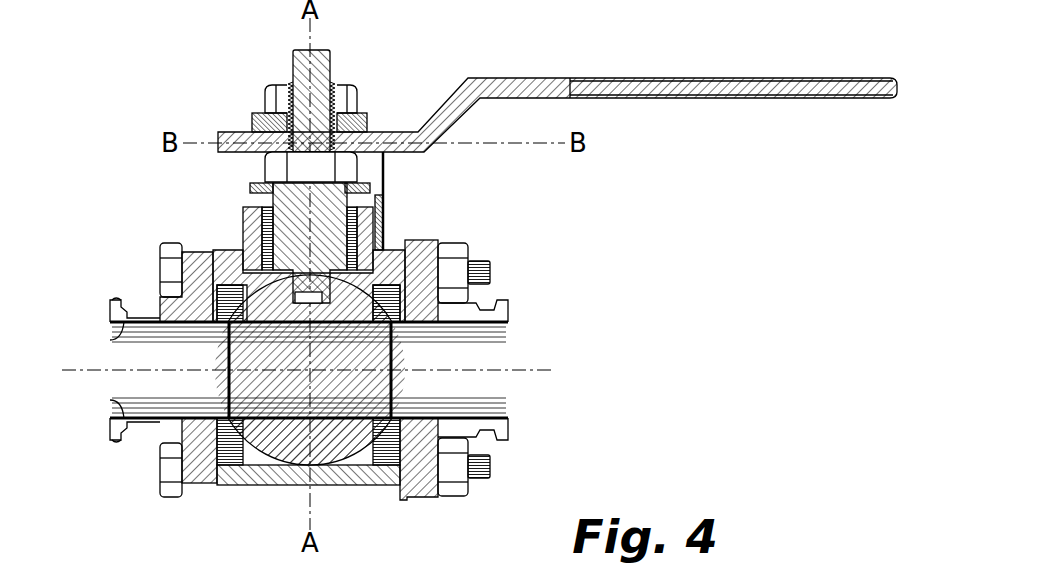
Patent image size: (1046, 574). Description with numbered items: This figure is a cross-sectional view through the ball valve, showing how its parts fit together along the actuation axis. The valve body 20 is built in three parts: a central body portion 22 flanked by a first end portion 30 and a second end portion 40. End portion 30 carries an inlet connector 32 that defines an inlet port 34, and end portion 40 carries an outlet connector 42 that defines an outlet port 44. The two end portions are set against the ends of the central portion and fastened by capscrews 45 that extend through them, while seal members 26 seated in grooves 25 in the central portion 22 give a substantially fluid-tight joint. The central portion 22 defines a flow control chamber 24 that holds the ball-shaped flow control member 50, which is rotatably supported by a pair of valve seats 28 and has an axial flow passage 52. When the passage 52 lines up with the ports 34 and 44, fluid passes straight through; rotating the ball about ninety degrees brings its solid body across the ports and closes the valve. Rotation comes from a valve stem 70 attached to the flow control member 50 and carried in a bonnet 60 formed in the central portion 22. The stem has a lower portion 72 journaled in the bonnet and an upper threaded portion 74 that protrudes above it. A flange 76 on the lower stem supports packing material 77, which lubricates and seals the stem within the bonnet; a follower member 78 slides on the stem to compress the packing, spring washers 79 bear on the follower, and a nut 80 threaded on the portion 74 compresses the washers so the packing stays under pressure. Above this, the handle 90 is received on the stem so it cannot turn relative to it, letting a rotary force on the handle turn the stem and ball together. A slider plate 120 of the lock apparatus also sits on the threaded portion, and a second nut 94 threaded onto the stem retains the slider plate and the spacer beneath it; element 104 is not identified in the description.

The valve body 20 is at (220, 512).
The central body portion 22 is at (362, 486).
The flow control chamber 24 is at (260, 462).
The grooves 25 is at (210, 243).
The seal members 26 is at (160, 298).
The valve seats 28 is at (221, 324).
The first end portion 30 is at (140, 440).
The inlet connector 32 is at (116, 443).
The inlet port 34 is at (124, 410).
The second end portion 40 is at (423, 506).
The outlet connector 42 is at (500, 433).
The outlet port 44 is at (507, 339).
The capscrews 45 is at (490, 266).
The flow control member 50 is at (330, 447).
The axial flow passage 52 is at (330, 413).
The bonnet 60 is at (386, 212).
The valve stem 70 is at (278, 60).
The lower portion of the valve stem 72 is at (310, 243).
The upper threaded portion of the valve stem 74 is at (385, 172).
The flange 76 is at (283, 292).
The packing material 77 is at (246, 221).
The follower member 78 is at (387, 200).
The spring washers 79 is at (250, 181).
The nut 80 is at (296, 180).
The handle 90 is at (685, 78).
The second nut 94 is at (268, 90).
The spacer block 104 is at (341, 113).
The slider plate 120 is at (365, 113).